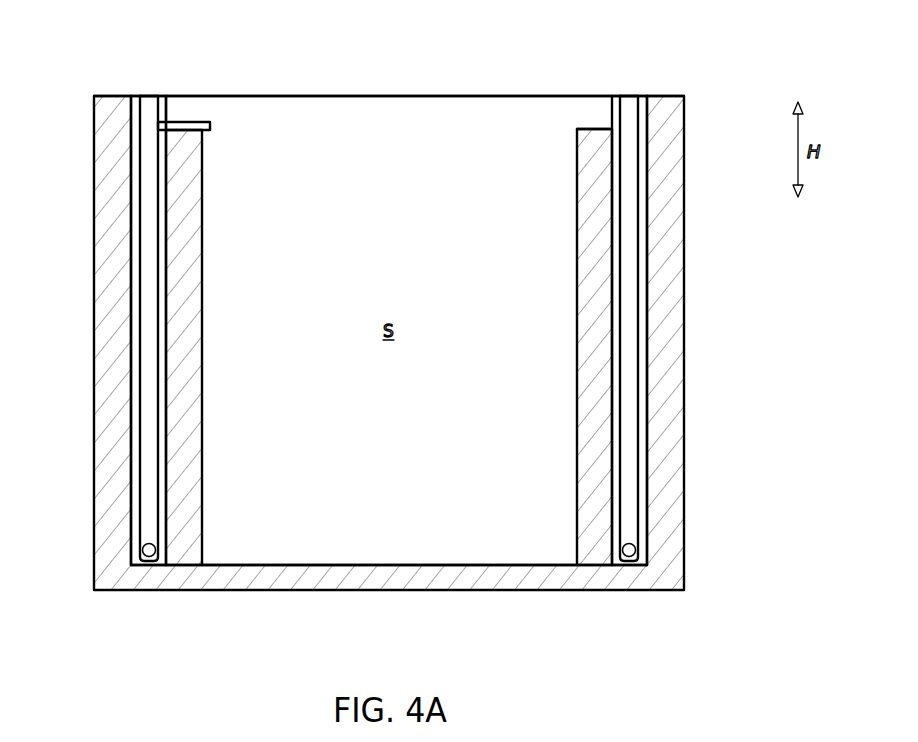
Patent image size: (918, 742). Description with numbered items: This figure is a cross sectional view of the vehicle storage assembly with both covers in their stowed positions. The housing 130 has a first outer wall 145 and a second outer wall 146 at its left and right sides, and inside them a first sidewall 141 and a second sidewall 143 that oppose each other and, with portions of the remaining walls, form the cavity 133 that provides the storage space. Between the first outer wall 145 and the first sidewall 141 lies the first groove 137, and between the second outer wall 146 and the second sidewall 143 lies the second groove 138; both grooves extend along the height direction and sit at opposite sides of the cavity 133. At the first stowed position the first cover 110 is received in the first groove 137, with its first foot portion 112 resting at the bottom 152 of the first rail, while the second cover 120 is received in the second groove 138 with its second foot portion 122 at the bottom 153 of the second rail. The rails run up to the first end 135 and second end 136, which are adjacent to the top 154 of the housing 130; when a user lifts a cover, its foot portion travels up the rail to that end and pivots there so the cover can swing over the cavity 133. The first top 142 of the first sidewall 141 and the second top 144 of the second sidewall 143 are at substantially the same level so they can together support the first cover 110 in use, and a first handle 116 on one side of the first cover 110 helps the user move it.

The housing 130 is at (684, 137).
The cavity 133 is at (428, 225).
The top 154 is at (363, 95).
The first outer wall 145 is at (127, 233).
The second outer wall 146 is at (653, 235).
The first sidewall 141 is at (183, 185).
The second sidewall 143 is at (597, 183).
The second top 144 is at (595, 128).
The first handle 116 is at (195, 118).
The first top 142 is at (192, 131).
The first groove 137 is at (132, 383).
The second groove 138 is at (643, 383).
The bottom of the first rail 152 is at (137, 562).
The bottom of the second rail 153 is at (640, 562).
The first cover 110 is at (147, 325).
The second cover 120 is at (630, 325).
The first end 135 is at (150, 95).
The second end 136 is at (628, 95).
The first foot portion 112 is at (150, 550).
The second foot portion 122 is at (628, 550).